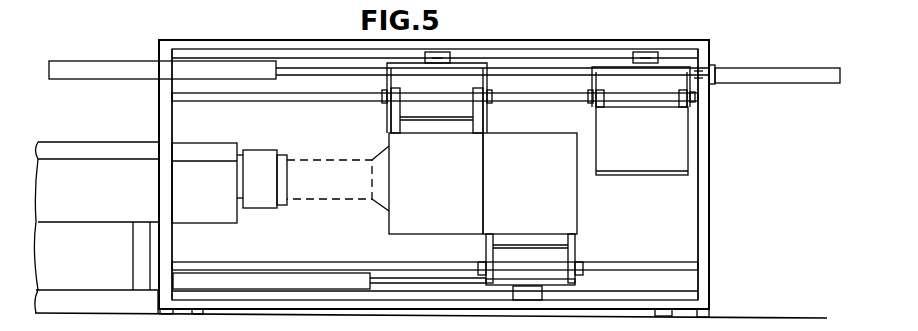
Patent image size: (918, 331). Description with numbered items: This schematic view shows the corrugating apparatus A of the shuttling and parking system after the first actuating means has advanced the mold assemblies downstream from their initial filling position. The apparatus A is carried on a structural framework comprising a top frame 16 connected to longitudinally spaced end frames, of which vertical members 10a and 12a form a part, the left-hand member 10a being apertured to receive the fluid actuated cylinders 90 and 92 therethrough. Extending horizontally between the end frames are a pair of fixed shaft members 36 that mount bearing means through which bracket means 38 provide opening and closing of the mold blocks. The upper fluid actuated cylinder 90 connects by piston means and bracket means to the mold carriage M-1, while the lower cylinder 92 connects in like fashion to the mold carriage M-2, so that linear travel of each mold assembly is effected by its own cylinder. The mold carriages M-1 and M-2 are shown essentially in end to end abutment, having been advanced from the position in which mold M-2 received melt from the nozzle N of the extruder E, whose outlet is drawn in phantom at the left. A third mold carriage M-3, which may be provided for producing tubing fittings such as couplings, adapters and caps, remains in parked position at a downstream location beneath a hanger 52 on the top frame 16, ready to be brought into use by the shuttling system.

The top frame 16 is at (568, 44).
The vertical member of end frame 10 10a is at (166, 106).
The vertical member of end frame 12 12a is at (711, 181).
The upper fluid actuated cylinder 90 is at (97, 63).
The hanger bracket 52 is at (543, 58).
The fixed shaft members 36 is at (540, 100).
The bracket means 38 is at (396, 112).
The fluid actuated cylinder 92 is at (260, 277).
The extruder E is at (53, 142).
The nozzle N is at (383, 207).
The corrugating apparatus A is at (717, 249).
The mold carriage M-1 is at (436, 183).
The mold carriage M-2 is at (530, 183).
The mold carriage M-3 is at (642, 141).